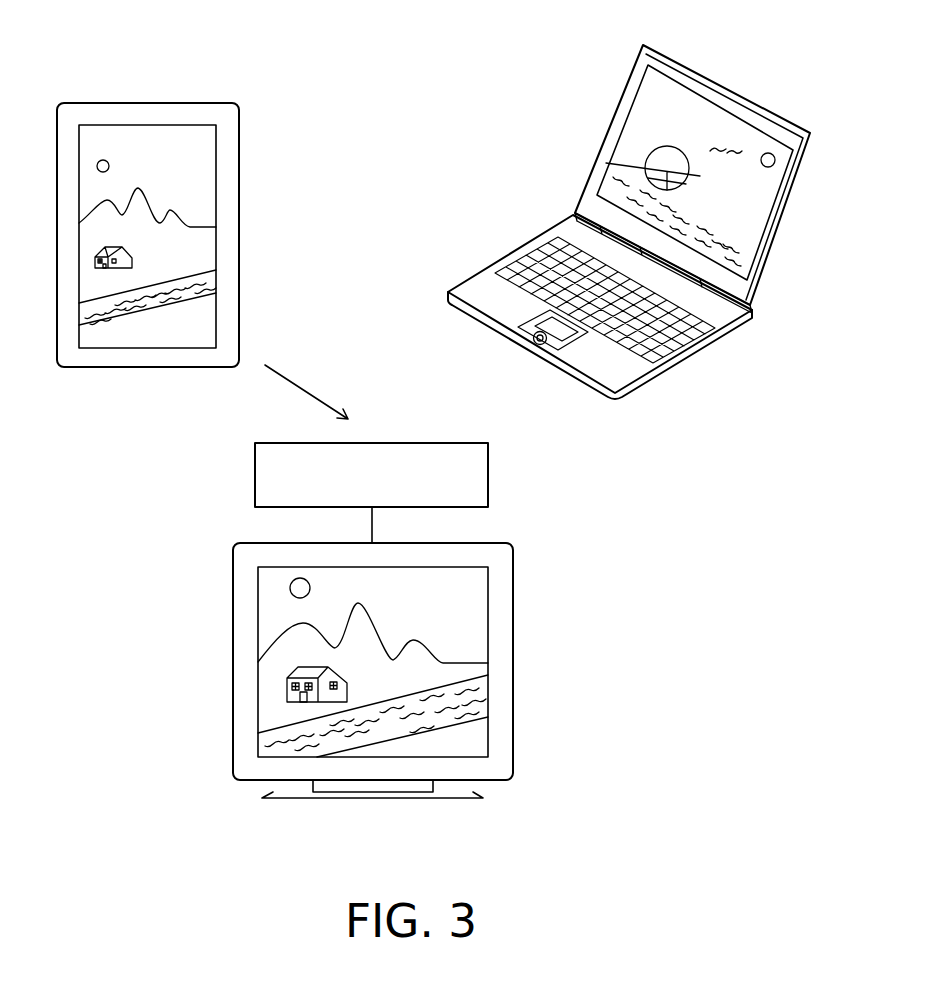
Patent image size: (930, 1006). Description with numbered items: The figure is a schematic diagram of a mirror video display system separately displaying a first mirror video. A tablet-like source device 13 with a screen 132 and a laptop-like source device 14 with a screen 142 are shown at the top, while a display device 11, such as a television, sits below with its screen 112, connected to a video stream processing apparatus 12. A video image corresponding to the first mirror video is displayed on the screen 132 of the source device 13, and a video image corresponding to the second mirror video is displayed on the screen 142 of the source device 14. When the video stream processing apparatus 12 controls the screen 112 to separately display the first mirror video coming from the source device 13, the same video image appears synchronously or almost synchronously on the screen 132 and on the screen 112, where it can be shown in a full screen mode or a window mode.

The display device 11 is at (233, 592).
The screen 112 is at (258, 642).
The video stream processing apparatus 12 is at (488, 475).
The source device 13 is at (145, 102).
The screen 132 is at (218, 200).
The source device 14 is at (730, 88).
The screen 142 is at (613, 135).